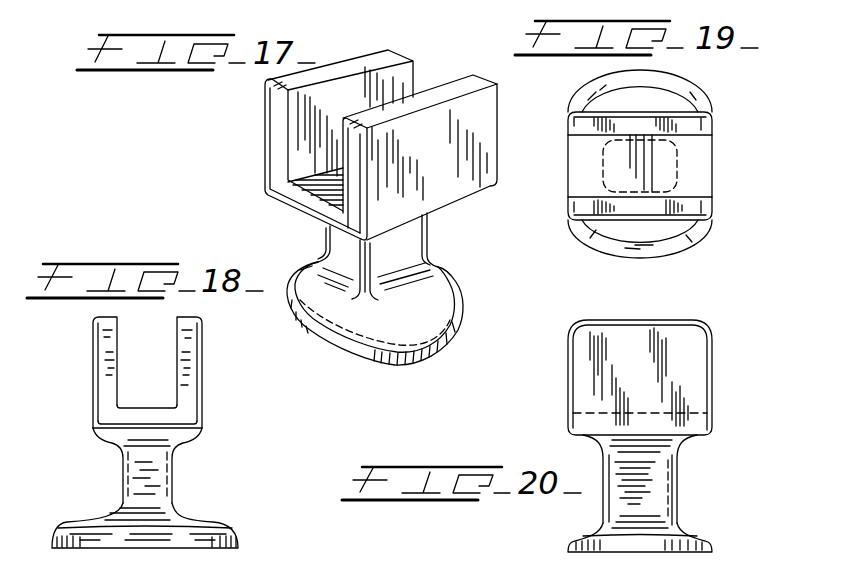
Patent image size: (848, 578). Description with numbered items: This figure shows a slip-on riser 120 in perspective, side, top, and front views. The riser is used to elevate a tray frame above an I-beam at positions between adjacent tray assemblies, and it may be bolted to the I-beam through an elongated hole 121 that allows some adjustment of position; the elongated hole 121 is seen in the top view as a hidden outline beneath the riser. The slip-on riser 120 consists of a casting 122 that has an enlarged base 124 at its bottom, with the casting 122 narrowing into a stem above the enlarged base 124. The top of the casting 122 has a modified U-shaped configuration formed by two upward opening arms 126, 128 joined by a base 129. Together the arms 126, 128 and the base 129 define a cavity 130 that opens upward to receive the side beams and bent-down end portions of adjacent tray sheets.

In FIG. 17, the slip-on riser 120 is at (236, 174).
In FIG. 18, the slip-on riser 120 is at (224, 392).
In FIG. 19, the slip-on riser 120 is at (732, 112).
In FIG. 20, the slip-on riser 120 is at (726, 332).
In FIG. 19, the elongated hole 121 is at (670, 179).
In FIG. 17, the casting 122 is at (416, 233).
In FIG. 18, the casting 122 is at (160, 457).
In FIG. 19, the casting 122 is at (582, 170).
In FIG. 20, the casting 122 is at (660, 473).
In FIG. 17, the enlarged base 124 is at (373, 335).
In FIG. 18, the enlarged base 124 is at (207, 527).
In FIG. 19, the enlarged base 124 is at (663, 232).
In FIG. 20, the enlarged base 124 is at (678, 538).
In FIG. 17, the upward opening arm 126 is at (350, 91).
In FIG. 18, the upward opening arm 126 is at (93, 338).
In FIG. 19, the upward opening arm 126 is at (632, 123).
In FIG. 17, the upward opening arm 128 is at (440, 122).
In FIG. 18, the upward opening arm 128 is at (187, 339).
In FIG. 19, the upward opening arm 128 is at (589, 208).
In FIG. 20, the upward opening arm 128 is at (695, 375).
In FIG. 17, the base 129 is at (312, 186).
In FIG. 18, the base 129 is at (146, 407).
In FIG. 19, the base 129 is at (700, 152).
In FIG. 17, the cavity 130 is at (300, 133).
In FIG. 18, the cavity 130 is at (167, 348).